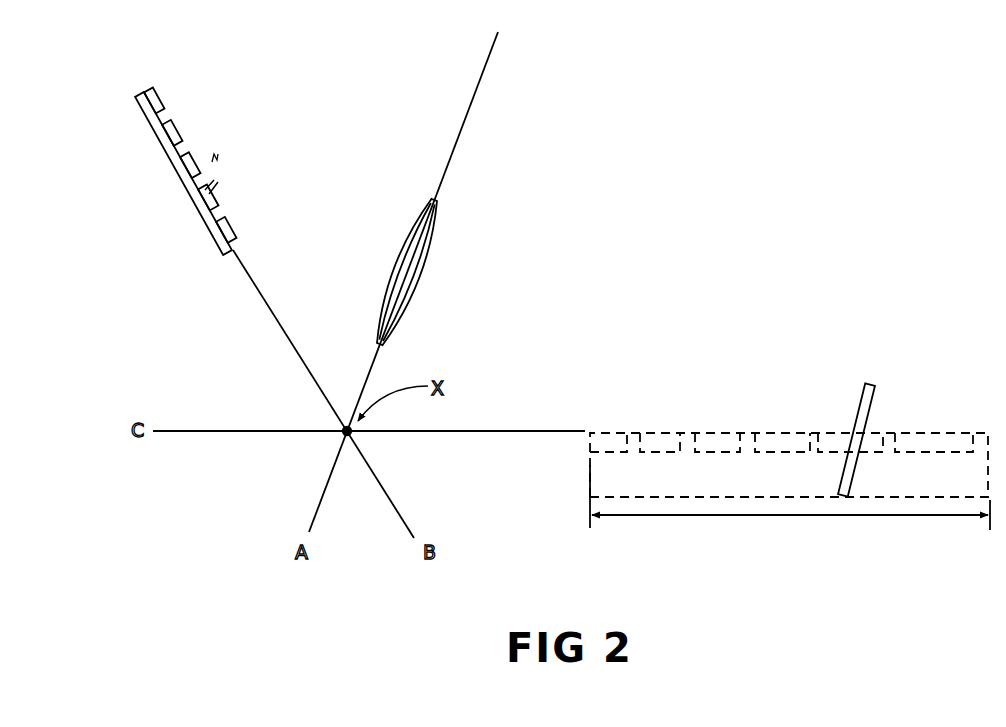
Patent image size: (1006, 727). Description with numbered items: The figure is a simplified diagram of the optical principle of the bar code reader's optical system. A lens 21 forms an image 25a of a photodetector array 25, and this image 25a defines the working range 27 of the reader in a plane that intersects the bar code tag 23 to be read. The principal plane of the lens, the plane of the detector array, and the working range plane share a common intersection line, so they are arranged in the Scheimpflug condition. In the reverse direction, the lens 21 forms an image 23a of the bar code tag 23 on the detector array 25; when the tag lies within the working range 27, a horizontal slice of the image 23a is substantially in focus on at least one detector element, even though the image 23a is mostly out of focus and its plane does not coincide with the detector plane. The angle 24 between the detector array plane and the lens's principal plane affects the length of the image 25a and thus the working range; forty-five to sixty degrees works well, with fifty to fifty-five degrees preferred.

The lens 21 is at (417, 296).
The bar code tag 23 is at (873, 382).
The image of the bar code tag 23a is at (215, 180).
The angle 24 is at (370, 368).
The photodetector array 25 is at (158, 145).
The image of the photodetector array 25a is at (582, 478).
The working range 27 is at (763, 519).